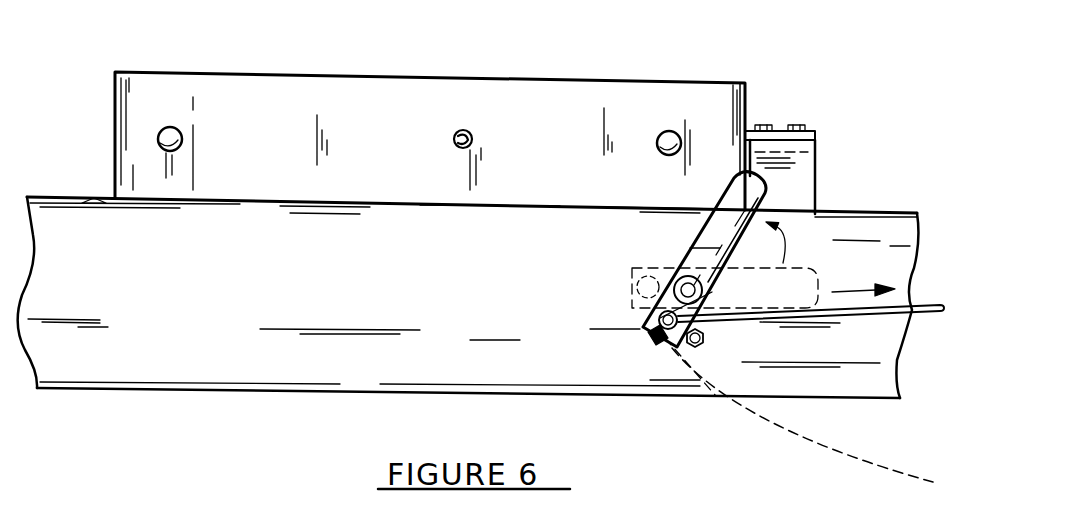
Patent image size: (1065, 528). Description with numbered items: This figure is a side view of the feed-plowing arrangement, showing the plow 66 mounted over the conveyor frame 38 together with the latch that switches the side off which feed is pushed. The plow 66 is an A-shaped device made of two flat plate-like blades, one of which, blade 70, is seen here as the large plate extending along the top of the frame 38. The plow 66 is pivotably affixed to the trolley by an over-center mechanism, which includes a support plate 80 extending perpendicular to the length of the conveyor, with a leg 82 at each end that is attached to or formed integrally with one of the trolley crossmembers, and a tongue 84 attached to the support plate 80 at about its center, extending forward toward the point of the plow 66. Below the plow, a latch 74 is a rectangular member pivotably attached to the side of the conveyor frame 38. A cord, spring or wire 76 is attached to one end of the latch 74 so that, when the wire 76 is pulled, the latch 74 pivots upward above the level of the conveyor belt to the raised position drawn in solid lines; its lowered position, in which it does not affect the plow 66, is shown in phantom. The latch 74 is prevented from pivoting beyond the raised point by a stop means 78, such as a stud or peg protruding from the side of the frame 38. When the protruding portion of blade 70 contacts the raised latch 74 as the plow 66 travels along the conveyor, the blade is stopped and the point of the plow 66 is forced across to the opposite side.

The conveyor frame 38 is at (837, 375).
The plow 66 is at (458, 78).
The plate-like member 70 is at (690, 97).
The latch 74 is at (780, 327).
The wire 76 is at (912, 308).
The stop means 78 is at (703, 335).
The support plate 80 is at (807, 147).
The leg 82 is at (785, 187).
The tongue 84 is at (815, 132).